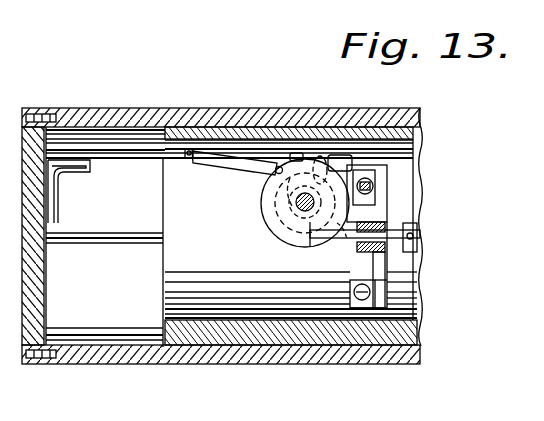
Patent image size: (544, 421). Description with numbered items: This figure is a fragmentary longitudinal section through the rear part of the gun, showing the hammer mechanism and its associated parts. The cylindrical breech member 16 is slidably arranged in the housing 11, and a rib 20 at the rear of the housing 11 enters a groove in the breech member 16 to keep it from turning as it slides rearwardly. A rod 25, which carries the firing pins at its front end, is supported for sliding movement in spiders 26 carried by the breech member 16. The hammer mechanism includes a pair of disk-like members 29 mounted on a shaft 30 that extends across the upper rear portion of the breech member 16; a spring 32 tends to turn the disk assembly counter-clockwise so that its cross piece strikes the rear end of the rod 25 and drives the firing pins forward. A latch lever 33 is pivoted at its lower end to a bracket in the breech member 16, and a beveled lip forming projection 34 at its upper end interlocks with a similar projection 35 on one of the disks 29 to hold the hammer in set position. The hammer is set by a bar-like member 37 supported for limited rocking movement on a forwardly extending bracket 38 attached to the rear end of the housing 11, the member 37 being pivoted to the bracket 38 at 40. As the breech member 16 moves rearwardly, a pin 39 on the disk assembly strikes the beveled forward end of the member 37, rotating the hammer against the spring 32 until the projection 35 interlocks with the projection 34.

The housing 11 is at (380, 365).
The breech member 16 is at (415, 337).
The rib 20 is at (130, 235).
The rod 25 is at (347, 237).
The spiders 26 is at (382, 207).
The disk-like members 29 is at (268, 220).
The shaft 30 is at (302, 210).
The spring 32 is at (318, 155).
The latch lever 33 is at (343, 168).
The lip forming projection 34 is at (353, 192).
The projection 35 is at (297, 157).
The bar-like member 37 is at (242, 165).
The bracket 38 is at (128, 162).
The pin 39 is at (276, 174).
The pivot 40 is at (189, 160).